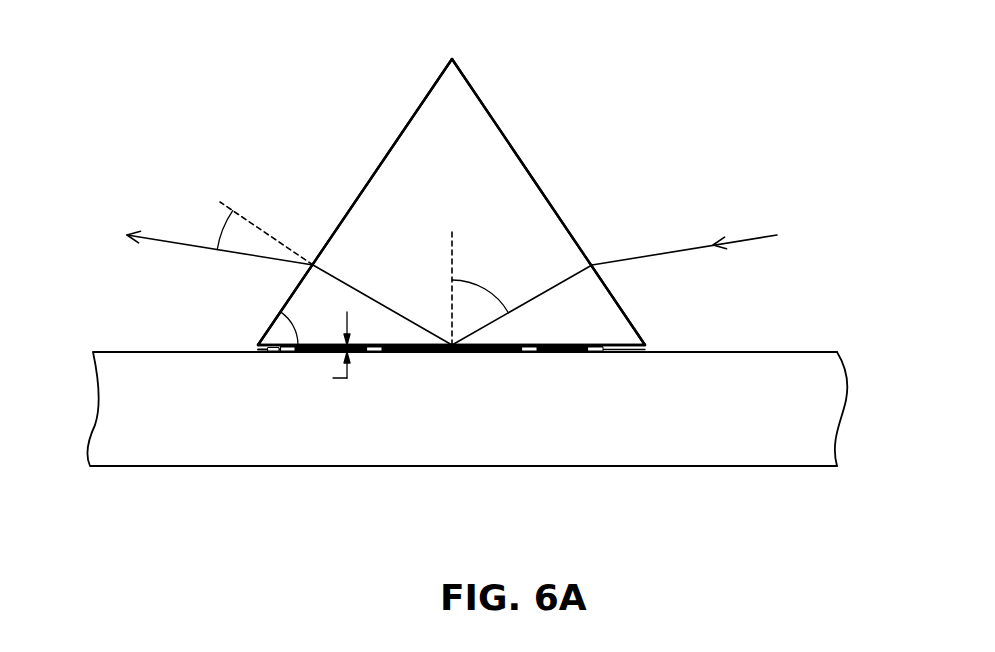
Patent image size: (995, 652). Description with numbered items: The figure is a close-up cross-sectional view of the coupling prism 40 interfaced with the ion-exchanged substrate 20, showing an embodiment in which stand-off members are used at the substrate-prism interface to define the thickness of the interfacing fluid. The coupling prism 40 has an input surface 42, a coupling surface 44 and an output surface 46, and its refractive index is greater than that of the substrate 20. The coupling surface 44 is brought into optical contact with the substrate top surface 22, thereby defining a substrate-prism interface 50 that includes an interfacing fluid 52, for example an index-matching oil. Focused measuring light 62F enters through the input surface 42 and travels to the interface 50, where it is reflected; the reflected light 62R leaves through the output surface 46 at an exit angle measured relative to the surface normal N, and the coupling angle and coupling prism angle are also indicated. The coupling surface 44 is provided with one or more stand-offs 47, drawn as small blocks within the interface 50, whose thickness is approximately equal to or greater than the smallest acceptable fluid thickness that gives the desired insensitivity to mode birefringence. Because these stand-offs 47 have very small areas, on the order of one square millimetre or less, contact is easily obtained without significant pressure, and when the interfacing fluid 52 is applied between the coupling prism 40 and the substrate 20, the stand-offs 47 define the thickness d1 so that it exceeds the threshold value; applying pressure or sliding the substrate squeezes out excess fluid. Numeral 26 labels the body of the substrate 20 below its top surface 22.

The substrate 20 is at (819, 322).
The substrate top surface 22 is at (698, 352).
The substrate 26 is at (723, 425).
The coupling prism 40 is at (426, 64).
The input surface 42 is at (493, 117).
The coupling surface 44 is at (272, 351).
The output surface 46 is at (410, 122).
The stand-off members 47 is at (287, 353).
The substrate-prism interface 50 is at (486, 360).
The interfacing fluid 52 is at (560, 352).
The focused measuring light 62F is at (757, 235).
The reflected light 62R is at (157, 242).
The surface normal N is at (228, 209).
The interfacing fluid thickness d1 is at (345, 378).